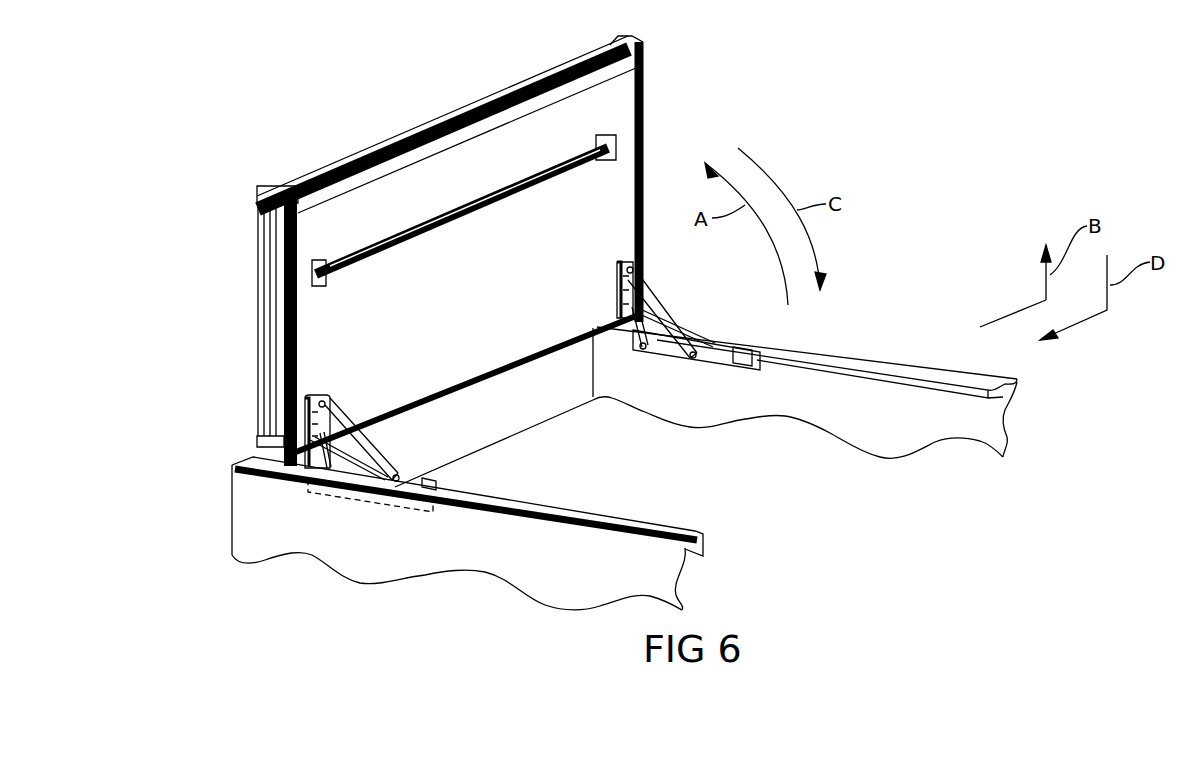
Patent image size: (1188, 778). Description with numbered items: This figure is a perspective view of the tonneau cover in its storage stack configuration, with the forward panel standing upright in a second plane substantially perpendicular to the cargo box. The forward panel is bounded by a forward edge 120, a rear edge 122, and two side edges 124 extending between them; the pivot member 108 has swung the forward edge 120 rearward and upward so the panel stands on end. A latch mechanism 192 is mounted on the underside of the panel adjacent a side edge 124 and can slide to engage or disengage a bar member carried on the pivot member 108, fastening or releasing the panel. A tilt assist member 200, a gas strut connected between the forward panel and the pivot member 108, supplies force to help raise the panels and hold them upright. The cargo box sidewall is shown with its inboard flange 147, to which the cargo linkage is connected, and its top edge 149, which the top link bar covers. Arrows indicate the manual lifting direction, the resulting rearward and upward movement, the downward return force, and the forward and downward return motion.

The pivot member 108 is at (368, 395).
The forward edge 120 is at (553, 348).
The rear edge 122 is at (505, 104).
The side edges 124 is at (300, 375).
The inboard flange 147 is at (874, 373).
The top edge 149 is at (853, 356).
The latch mechanism 192 is at (452, 222).
The tilt assist member 200 is at (392, 462).